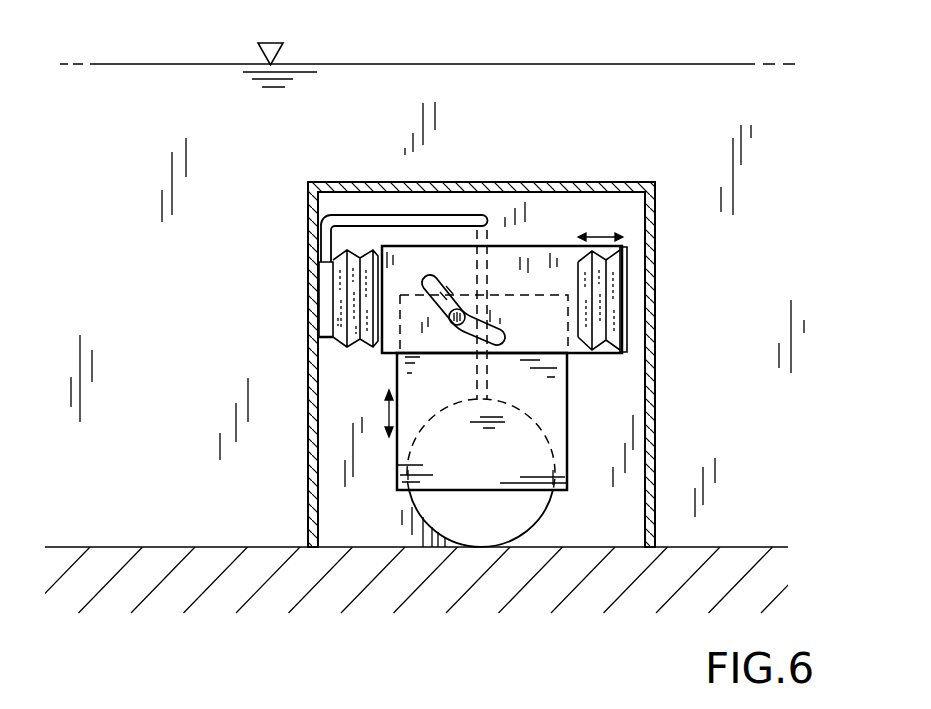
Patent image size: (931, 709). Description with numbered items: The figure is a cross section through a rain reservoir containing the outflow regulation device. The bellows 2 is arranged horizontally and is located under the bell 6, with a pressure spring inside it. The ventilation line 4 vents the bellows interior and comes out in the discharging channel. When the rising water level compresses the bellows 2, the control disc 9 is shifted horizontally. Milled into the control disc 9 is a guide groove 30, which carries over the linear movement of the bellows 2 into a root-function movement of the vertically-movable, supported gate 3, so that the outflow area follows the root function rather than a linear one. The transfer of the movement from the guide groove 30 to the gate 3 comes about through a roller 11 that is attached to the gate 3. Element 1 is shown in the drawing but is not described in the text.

The ball 1 is at (507, 522).
The bellows 2 is at (625, 262).
The gate 3 is at (557, 427).
The ventilation line 4 is at (373, 216).
The bell 6 is at (655, 337).
The control disc 9 is at (528, 253).
The roller 11 is at (457, 326).
The guide groove 30 is at (428, 279).